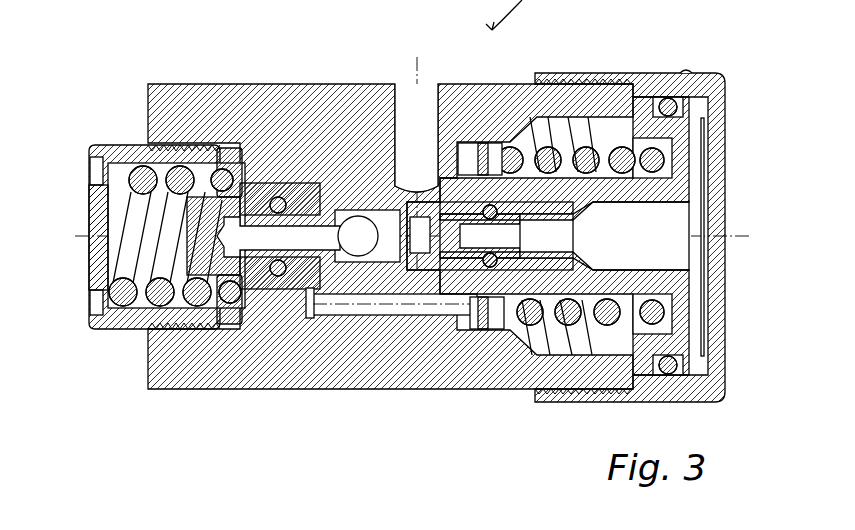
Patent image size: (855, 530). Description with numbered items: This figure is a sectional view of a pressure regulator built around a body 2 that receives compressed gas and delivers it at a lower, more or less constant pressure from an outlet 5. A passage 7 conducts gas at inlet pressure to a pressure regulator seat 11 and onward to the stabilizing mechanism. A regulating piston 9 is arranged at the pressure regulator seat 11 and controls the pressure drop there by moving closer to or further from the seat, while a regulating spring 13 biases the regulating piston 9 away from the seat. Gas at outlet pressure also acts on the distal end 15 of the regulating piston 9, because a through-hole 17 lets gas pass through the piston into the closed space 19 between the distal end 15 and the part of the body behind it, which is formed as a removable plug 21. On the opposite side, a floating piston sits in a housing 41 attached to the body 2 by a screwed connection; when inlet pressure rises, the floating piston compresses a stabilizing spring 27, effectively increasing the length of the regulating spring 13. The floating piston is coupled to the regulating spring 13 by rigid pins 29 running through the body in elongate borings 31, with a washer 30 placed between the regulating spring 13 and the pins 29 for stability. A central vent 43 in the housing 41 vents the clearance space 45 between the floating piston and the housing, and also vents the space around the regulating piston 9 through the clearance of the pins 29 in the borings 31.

The body 2 is at (240, 84).
The outlet 5 is at (408, 84).
The passage 7 is at (280, 250).
The regulating piston 9 is at (660, 192).
The pressure regulator seat 11 is at (420, 270).
The regulating spring 13 is at (655, 318).
The distal end 15 is at (700, 297).
The through-hole 17 is at (462, 270).
The closed space 19 is at (700, 225).
The removable plug 21 is at (695, 402).
The stabilizing spring 27 is at (125, 298).
The rigid pins 29 is at (350, 315).
The washer 30 is at (502, 322).
The elongate borings 31 is at (305, 289).
The housing 41 is at (118, 145).
The central vent 43 is at (89, 236).
The clearance space 45 is at (220, 389).